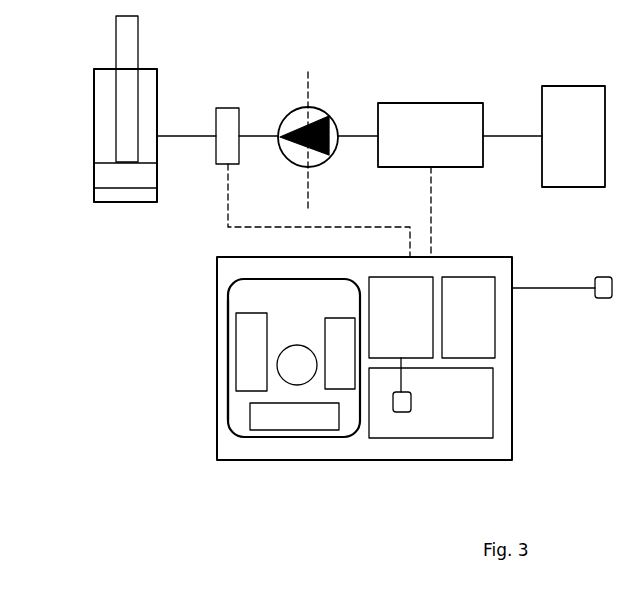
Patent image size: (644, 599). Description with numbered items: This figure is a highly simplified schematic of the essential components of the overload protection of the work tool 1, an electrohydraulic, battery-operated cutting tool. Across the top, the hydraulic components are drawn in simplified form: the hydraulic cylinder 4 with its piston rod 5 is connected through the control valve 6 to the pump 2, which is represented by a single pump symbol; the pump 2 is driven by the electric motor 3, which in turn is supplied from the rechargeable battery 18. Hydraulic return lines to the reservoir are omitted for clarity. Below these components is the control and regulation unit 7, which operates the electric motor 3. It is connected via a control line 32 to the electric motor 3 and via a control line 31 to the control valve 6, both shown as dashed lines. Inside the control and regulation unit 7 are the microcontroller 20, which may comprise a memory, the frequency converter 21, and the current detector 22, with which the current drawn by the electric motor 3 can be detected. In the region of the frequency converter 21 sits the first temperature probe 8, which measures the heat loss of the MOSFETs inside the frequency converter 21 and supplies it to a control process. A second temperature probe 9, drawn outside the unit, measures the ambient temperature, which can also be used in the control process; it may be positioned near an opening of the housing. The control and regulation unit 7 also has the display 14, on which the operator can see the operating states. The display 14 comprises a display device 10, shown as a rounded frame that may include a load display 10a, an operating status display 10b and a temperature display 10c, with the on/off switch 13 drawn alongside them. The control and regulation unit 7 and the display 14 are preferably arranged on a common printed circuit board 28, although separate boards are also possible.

The work tool 1 is at (64, 72).
The hydraulic pump 2 is at (298, 108).
The electric motor 3 is at (432, 103).
The hydraulic cylinder 4 is at (93, 130).
The piston rod 5 is at (130, 50).
The control valve 6 is at (225, 107).
The control and regulation unit 7 is at (502, 412).
The first temperature probe 8 is at (403, 412).
The second temperature probe 9 is at (605, 300).
The display device 10 is at (240, 295).
The load display 10a is at (243, 385).
The operating status display 10b is at (278, 413).
The temperature display 10c is at (340, 378).
The on/off switch 13 is at (298, 360).
The display 14 is at (230, 390).
The rechargeable battery 18 is at (567, 93).
The microcontroller 20 is at (401, 334).
The frequency converter 21 is at (431, 403).
The current detector 22 is at (468, 317).
The common printed circuit board 28 is at (474, 357).
The control line 31 is at (225, 198).
The control line 32 is at (433, 233).